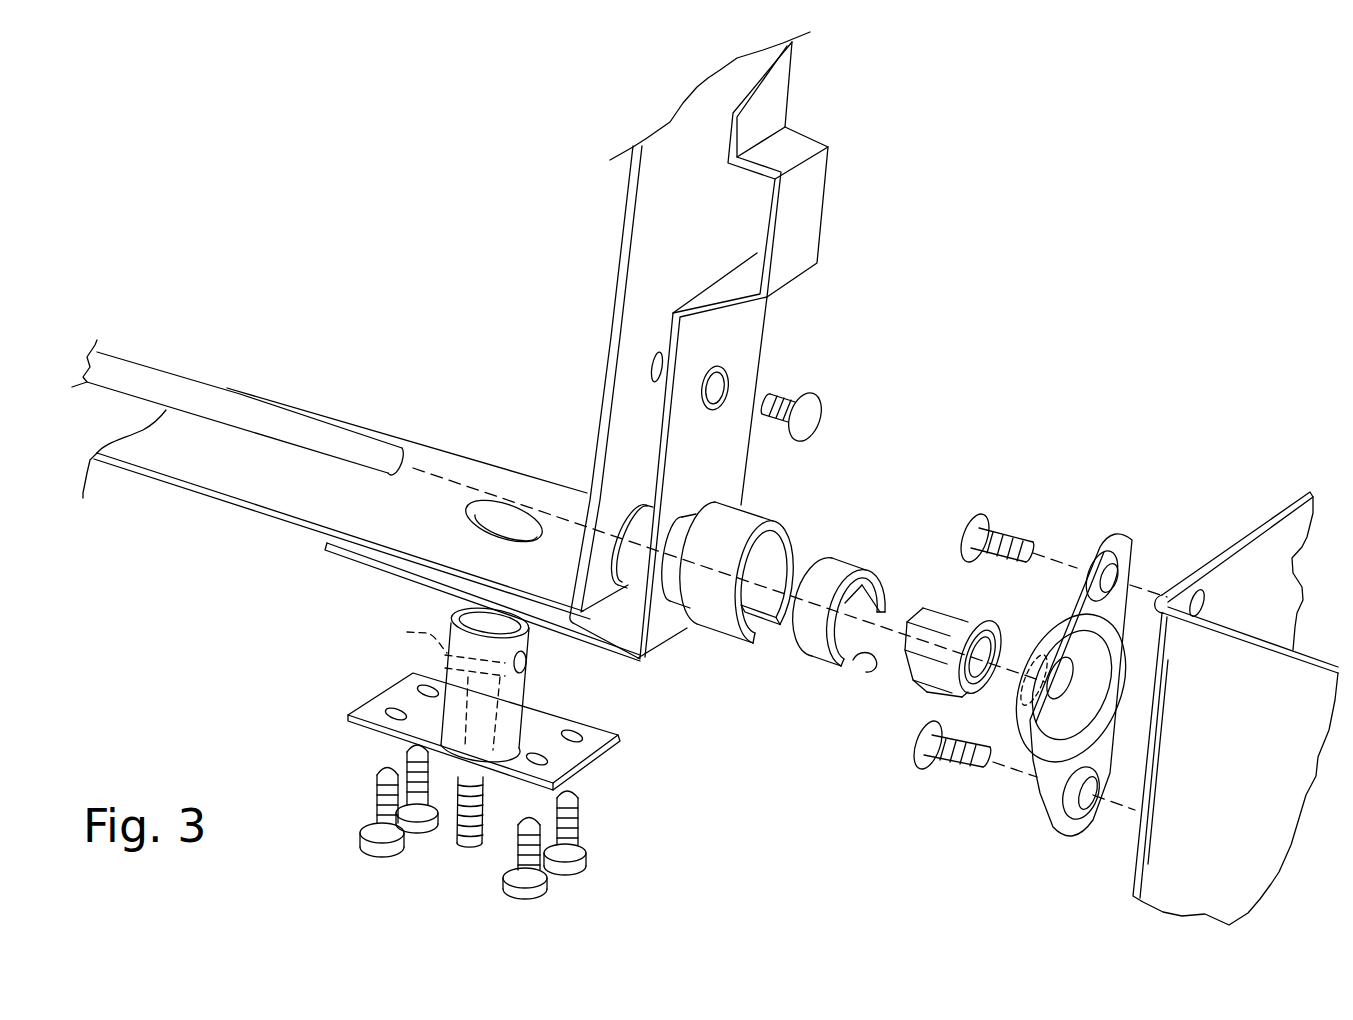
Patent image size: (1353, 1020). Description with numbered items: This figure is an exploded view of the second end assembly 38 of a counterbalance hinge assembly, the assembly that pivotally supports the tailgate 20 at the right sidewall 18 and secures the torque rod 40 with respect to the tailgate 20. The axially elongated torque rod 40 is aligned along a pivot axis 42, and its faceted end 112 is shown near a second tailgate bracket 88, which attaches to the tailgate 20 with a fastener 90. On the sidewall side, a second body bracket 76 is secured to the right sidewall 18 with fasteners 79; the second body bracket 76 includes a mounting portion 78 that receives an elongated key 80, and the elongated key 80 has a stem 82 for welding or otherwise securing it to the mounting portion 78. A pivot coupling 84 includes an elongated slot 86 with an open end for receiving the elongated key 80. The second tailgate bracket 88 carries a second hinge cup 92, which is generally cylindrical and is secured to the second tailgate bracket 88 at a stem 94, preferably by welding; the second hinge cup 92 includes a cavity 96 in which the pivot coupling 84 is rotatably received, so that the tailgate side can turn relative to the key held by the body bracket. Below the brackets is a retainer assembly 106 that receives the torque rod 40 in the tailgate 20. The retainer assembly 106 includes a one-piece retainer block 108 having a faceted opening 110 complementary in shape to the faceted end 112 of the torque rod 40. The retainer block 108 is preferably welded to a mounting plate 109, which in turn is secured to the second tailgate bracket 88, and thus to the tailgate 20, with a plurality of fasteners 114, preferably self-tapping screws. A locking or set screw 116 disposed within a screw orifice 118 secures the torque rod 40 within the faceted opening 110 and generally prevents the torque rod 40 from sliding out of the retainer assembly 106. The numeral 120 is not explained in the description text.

The right sidewall 18 is at (1290, 500).
The tailgate 20 is at (690, 251).
The second end assembly 38 is at (977, 200).
The torque rod 40 is at (180, 373).
The pivot axis 42 is at (132, 382).
The second body bracket 76 is at (1088, 654).
The mounting portion 78 is at (1057, 637).
The fasteners 79 is at (980, 517).
The elongated key 80 is at (923, 670).
The stem 82 is at (983, 620).
The pivot coupling 84 is at (843, 549).
The elongated slot 86 is at (870, 660).
The second tailgate bracket 88 is at (747, 343).
The fastener 90 is at (816, 398).
The second hinge cup 92 is at (781, 520).
The stem 94 is at (627, 572).
The cavity 96 is at (762, 622).
The retainer assembly 106 is at (337, 655).
The retainer block 108 is at (524, 692).
The mounting plate 109 is at (357, 712).
The faceted opening 110 is at (528, 662).
The faceted end 112 is at (357, 428).
The fasteners 114 is at (360, 820).
The set screw 116 is at (462, 850).
The screw orifice 118 is at (407, 635).
The nut 120 is at (954, 626).